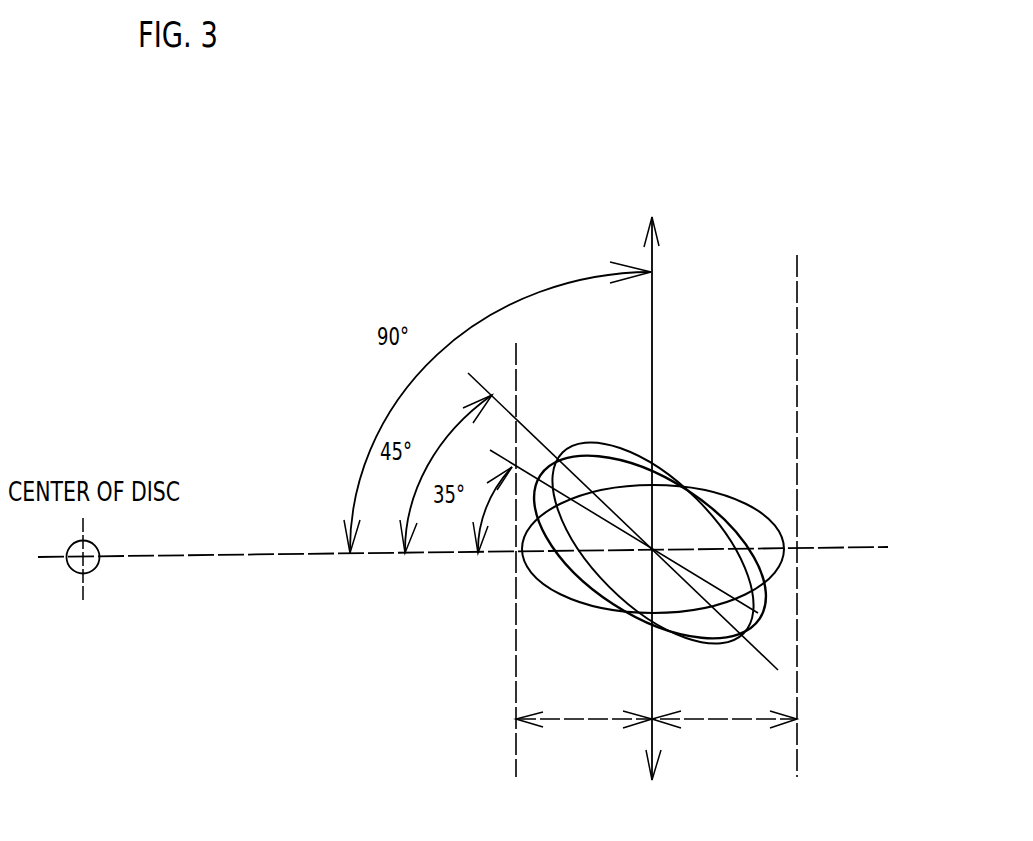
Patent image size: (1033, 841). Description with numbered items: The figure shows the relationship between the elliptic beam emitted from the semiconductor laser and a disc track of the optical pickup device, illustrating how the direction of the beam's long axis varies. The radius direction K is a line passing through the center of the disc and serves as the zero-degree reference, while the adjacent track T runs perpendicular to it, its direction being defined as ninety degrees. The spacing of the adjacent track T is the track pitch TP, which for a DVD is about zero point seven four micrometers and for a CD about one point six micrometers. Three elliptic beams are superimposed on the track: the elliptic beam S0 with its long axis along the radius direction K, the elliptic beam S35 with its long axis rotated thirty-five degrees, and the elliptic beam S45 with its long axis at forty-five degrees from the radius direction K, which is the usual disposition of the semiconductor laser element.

The radius direction K is at (242, 557).
The track T is at (651, 475).
The track pitch TP is at (656, 516).
The elliptic beam S0 is at (557, 597).
The elliptic beam S35 is at (593, 460).
The elliptic beam S45 is at (665, 473).